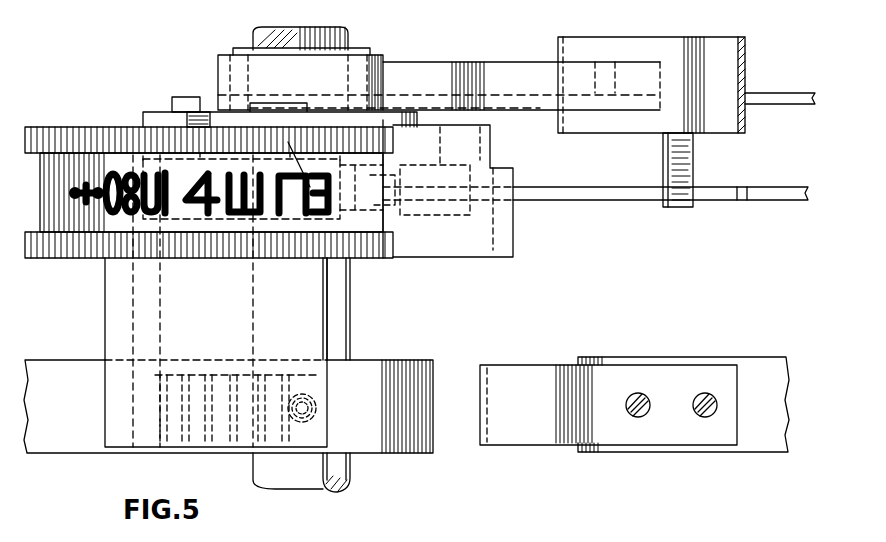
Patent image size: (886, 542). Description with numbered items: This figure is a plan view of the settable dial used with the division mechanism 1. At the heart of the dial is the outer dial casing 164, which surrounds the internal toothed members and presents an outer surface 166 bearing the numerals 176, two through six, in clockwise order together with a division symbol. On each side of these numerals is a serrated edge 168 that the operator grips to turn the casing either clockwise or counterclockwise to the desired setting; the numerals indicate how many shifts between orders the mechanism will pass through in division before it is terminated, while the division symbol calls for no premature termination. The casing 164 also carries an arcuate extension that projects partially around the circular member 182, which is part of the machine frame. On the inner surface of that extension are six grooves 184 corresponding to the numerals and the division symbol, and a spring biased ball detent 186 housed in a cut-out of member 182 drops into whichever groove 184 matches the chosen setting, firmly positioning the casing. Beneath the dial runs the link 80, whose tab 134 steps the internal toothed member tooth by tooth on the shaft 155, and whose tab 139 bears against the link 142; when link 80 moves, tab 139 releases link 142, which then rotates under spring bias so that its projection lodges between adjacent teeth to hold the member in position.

The printing apparatus 1 is at (112, 123).
The link 80 is at (788, 96).
The tab 134 is at (185, 127).
The tab 139 is at (690, 172).
The link 142 is at (605, 196).
The shaft 155 is at (338, 468).
The outer dial casing 164 is at (65, 259).
The outer surface 166 is at (343, 192).
The serrated edge 168 is at (327, 220).
The numerals 176 is at (277, 207).
The circular member 182 is at (418, 423).
The grooves 184 is at (233, 422).
The spring biased ball detent 186 is at (327, 395).